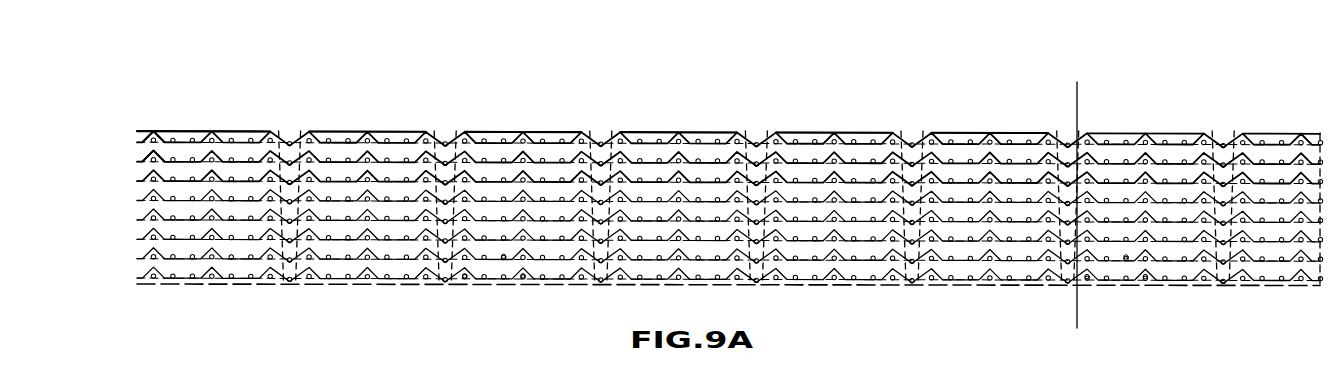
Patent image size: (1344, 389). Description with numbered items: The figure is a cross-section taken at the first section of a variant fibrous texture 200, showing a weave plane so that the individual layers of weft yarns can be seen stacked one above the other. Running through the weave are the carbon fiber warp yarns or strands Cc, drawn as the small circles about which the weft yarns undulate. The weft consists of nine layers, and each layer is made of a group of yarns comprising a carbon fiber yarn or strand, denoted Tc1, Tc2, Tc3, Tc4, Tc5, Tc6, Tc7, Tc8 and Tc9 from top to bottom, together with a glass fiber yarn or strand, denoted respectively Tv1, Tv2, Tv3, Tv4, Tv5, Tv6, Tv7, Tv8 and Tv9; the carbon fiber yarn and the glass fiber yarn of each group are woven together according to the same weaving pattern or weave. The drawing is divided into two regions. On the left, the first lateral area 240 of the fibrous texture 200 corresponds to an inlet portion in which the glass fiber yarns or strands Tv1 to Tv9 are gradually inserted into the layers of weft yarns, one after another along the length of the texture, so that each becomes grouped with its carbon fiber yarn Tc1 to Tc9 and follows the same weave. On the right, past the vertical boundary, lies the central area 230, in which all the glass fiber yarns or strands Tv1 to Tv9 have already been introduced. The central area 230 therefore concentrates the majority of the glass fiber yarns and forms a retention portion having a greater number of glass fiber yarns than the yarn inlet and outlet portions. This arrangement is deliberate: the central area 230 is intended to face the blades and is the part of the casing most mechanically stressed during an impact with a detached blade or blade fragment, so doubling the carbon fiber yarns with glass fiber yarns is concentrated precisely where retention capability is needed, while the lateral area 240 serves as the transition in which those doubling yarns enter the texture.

The fibrous texture 200 is at (702, 88).
The central area 230 is at (1224, 108).
The first lateral area 240 is at (573, 106).
The carbon fiber weft yarn or strand Tc1 is at (140, 137).
The carbon fiber weft yarn or strand Tc2 is at (146, 134).
The carbon fiber weft yarn or strand Tc3 is at (146, 154).
The carbon fiber weft yarn or strand Tc4 is at (140, 177).
The carbon fiber weft yarn or strand Tc5 is at (141, 196).
The carbon fiber weft yarn or strand Tc6 is at (141, 221).
The carbon fiber weft yarn or strand Tc7 is at (141, 243).
The carbon fiber weft yarn or strand Tc8 is at (141, 262).
The carbon fiber weft yarn or strand Tc9 is at (141, 283).
The glass fiber weft yarn or strand Tv1 is at (1054, 133).
The glass fiber weft yarn or strand Tv2 is at (925, 133).
The glass fiber weft yarn or strand Tv3 is at (770, 133).
The glass fiber weft yarn or strand Tv4 is at (617, 131).
The glass fiber weft yarn or strand Tv5 is at (458, 131).
The glass fiber weft yarn or strand Tv6 is at (300, 130).
The glass fiber weft yarn or strand Tv7 is at (140, 128).
The glass fiber weft yarn or strand Tv8 is at (146, 137).
The glass fiber weft yarn or strand Tv9 is at (147, 158).
The carbon fiber warp yarn or strand Cc is at (503, 260).